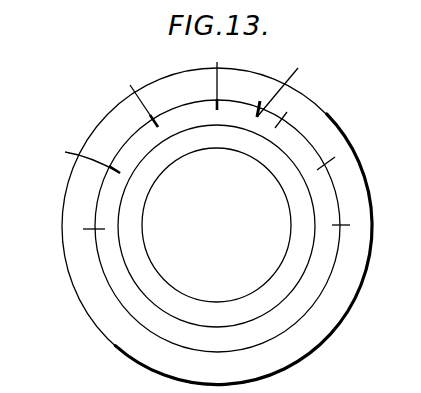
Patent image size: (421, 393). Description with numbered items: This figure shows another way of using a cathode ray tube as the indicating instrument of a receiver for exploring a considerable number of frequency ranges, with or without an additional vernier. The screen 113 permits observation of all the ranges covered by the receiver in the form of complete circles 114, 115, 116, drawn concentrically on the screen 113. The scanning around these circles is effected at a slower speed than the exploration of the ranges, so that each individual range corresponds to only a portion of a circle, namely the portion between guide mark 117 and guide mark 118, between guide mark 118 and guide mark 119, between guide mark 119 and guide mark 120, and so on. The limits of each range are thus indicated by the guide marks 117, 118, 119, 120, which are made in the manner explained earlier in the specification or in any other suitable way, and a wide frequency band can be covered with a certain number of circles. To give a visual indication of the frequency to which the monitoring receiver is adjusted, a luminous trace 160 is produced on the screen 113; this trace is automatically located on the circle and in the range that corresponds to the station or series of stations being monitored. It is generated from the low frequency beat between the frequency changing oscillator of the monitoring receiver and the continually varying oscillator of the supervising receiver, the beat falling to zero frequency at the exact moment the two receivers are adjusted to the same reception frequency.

The screen 113 is at (62, 207).
The complete circle 114 is at (147, 250).
The complete circle 115 is at (140, 283).
The complete circle 116 is at (112, 290).
The guide mark 117 is at (85, 157).
The guide mark 118 is at (136, 97).
The guide mark 119 is at (216, 76).
The luminous trace 160 is at (283, 86).
The guide mark 120 is at (285, 118).